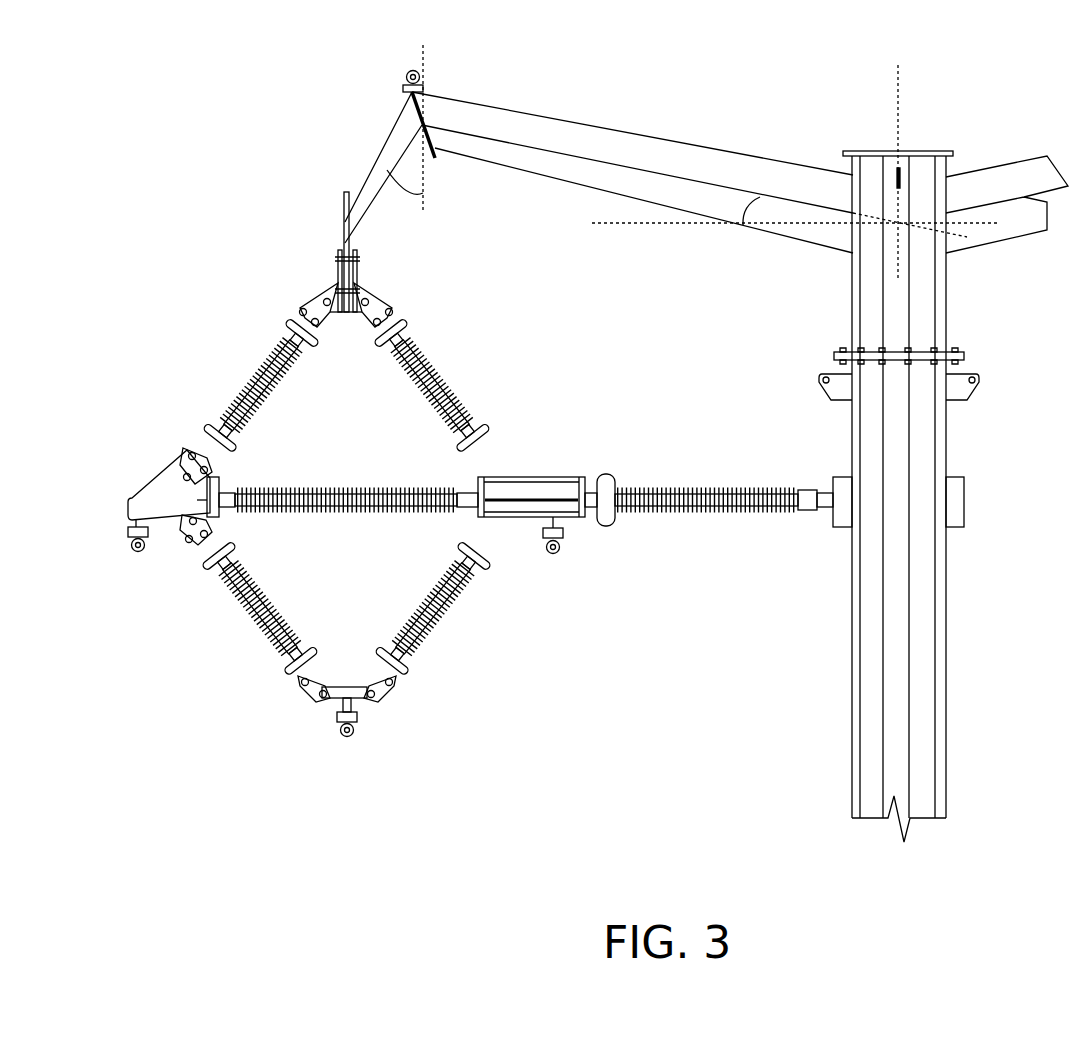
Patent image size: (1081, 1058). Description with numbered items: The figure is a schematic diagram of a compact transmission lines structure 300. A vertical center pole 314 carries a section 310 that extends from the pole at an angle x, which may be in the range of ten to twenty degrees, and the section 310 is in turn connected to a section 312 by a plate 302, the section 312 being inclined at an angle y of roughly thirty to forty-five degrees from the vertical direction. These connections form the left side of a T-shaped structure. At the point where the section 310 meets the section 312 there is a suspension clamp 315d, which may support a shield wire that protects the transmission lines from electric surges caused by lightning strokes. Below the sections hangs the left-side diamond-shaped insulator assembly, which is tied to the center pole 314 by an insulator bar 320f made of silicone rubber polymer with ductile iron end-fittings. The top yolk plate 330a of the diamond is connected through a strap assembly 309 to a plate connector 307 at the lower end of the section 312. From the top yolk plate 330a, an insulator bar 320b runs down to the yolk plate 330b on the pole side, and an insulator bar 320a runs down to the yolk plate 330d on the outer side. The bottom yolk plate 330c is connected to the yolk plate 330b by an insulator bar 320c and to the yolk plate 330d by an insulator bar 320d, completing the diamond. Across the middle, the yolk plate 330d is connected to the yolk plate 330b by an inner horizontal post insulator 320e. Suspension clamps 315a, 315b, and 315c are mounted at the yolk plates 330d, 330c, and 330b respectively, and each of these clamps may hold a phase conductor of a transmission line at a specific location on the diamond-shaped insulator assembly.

The switch assembly 300 is at (176, 114).
The plate 302 is at (432, 137).
The plate connector 307 is at (340, 215).
The strap assembly 309 is at (355, 270).
The section 310 is at (710, 147).
The section 312 is at (375, 157).
The center pole 314 is at (918, 150).
The suspension clamp 315a is at (136, 552).
The suspension clamp 315b is at (347, 740).
The suspension clamp 315c is at (556, 555).
The suspension clamp 315d is at (407, 72).
The insulator bar 320a is at (245, 368).
The insulator bar 320b is at (458, 382).
The insulator bar 320c is at (443, 573).
The insulator bar 320d is at (283, 613).
The inner horizontal post insulator 320e is at (305, 490).
The insulator bar 320f is at (713, 487).
The top yolk plate 330a is at (330, 290).
The yolk plate 330b is at (553, 473).
The yolk plate 330c is at (365, 698).
The yolk plate 330d is at (157, 487).